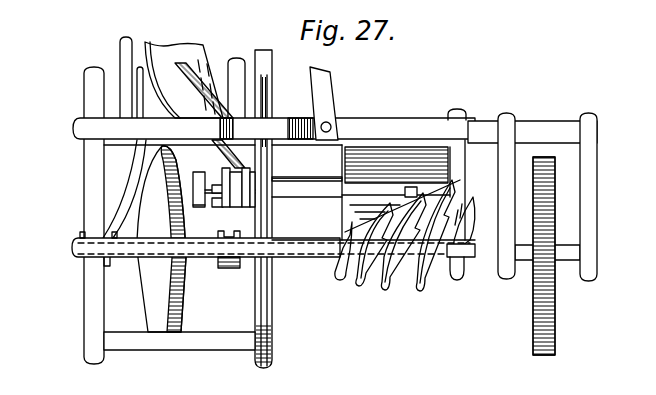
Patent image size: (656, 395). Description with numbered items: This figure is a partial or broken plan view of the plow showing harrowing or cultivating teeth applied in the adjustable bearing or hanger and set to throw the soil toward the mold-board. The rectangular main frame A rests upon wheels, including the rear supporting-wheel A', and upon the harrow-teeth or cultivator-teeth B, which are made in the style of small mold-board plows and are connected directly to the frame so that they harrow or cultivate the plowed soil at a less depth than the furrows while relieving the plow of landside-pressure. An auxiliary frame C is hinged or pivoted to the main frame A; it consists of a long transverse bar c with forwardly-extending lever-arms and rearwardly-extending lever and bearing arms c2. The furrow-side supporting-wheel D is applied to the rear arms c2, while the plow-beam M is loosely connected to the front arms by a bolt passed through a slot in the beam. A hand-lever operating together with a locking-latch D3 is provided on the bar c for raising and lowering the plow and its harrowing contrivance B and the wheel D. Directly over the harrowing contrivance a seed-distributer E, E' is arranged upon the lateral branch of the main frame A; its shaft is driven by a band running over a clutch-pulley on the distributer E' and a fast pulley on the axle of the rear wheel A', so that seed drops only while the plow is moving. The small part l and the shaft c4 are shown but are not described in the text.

The main frame A is at (269, 202).
The rear supporting-wheel A' is at (161, 239).
The plow-beam M is at (174, 140).
The lower shaft c4 is at (80, 233).
The locking-latch D3 is at (324, 103).
The transverse bar c is at (433, 111).
The auxiliary frame C is at (532, 184).
The rearwardly-extending lever and bearing arms c2 is at (554, 197).
The furrow-side supporting-wheel D is at (552, 256).
The seed-distributer E is at (373, 190).
The seed-distributer E' is at (396, 172).
The harrow-teeth or cultivator-teeth B is at (405, 249).
The bracket l is at (461, 253).